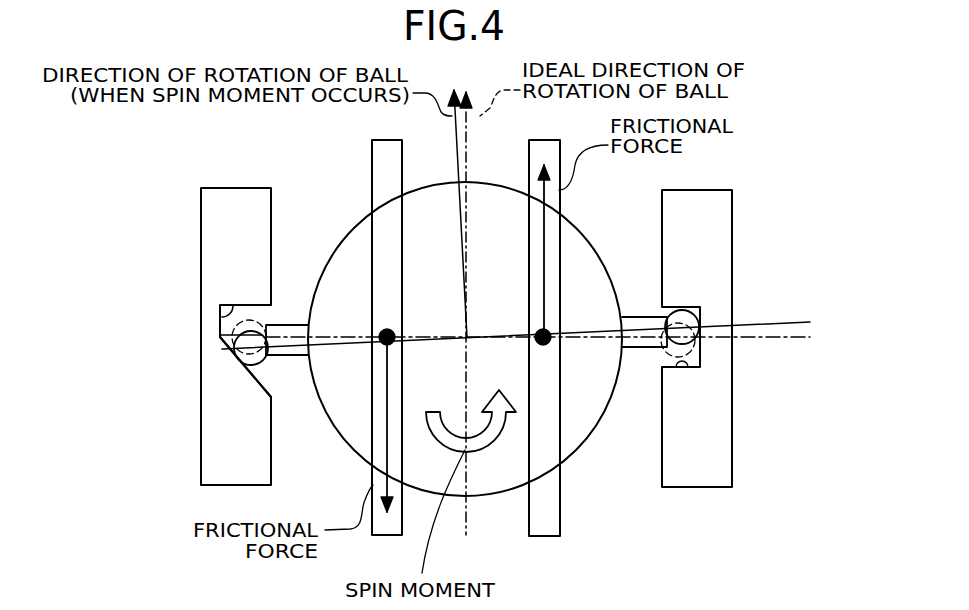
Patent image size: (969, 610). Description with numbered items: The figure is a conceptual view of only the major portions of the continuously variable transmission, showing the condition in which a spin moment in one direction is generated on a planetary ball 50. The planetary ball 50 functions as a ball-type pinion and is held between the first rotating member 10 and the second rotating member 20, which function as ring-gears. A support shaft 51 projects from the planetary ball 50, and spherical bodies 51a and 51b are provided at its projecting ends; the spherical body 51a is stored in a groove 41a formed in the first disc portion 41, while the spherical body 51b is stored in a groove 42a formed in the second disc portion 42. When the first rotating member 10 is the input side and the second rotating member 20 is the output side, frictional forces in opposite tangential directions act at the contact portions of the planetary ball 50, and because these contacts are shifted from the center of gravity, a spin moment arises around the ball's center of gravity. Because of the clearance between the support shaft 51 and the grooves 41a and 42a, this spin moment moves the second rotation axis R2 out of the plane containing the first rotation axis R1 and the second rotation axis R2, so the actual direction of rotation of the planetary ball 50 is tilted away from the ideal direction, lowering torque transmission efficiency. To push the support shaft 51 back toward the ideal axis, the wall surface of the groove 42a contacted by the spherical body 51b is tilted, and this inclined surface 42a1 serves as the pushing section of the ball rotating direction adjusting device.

The first rotating member 10 is at (560, 506).
The second rotating member 20 is at (373, 167).
The first disc portion 41 is at (702, 188).
The groove 41a is at (685, 367).
The second disc portion 42 is at (240, 187).
The groove 42a is at (225, 308).
The inclined surface 42a1 is at (270, 387).
The planetary ball 50 is at (332, 255).
The support shaft 51 is at (633, 316).
The spherical body 51a is at (683, 310).
The spherical body 51b is at (257, 327).
The first rotation axis R1 is at (797, 340).
The second rotation axis R2 is at (770, 318).